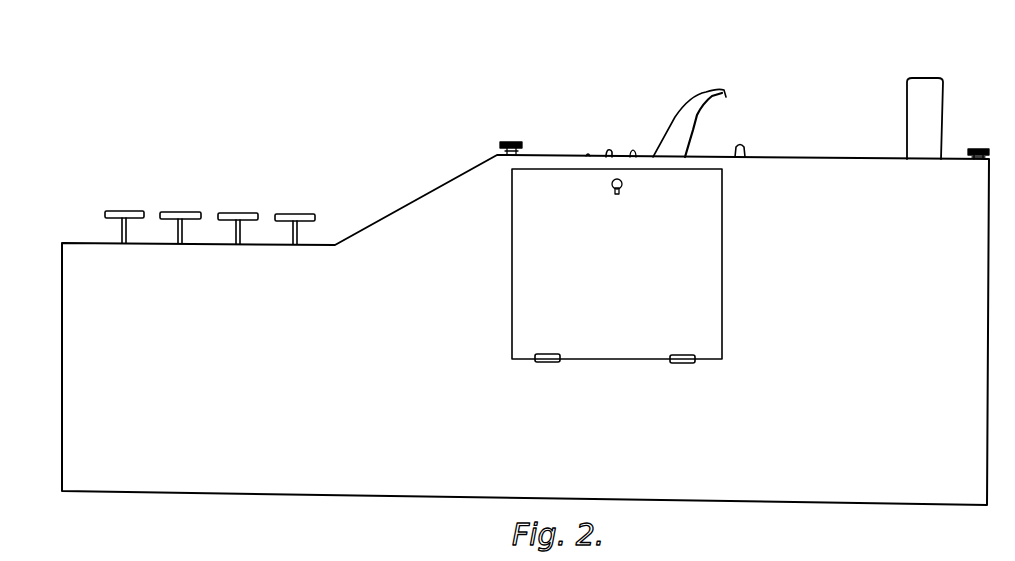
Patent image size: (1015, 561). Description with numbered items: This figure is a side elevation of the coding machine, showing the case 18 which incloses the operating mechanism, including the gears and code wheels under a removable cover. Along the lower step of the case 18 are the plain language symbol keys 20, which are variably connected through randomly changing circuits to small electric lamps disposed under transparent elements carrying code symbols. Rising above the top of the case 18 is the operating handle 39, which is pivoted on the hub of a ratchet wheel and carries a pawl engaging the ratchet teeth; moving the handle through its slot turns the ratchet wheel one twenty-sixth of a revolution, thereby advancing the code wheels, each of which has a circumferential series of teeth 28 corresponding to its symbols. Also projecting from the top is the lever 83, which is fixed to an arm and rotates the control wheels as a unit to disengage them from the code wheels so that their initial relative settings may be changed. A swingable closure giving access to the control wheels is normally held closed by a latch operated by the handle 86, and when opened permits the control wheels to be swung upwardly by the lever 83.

The case 18 is at (62, 306).
The plain language symbol keys 20 is at (303, 212).
The teeth 28 is at (611, 148).
The operating handle 39 is at (694, 113).
The handle 86 is at (748, 146).
The lever 83 is at (933, 107).